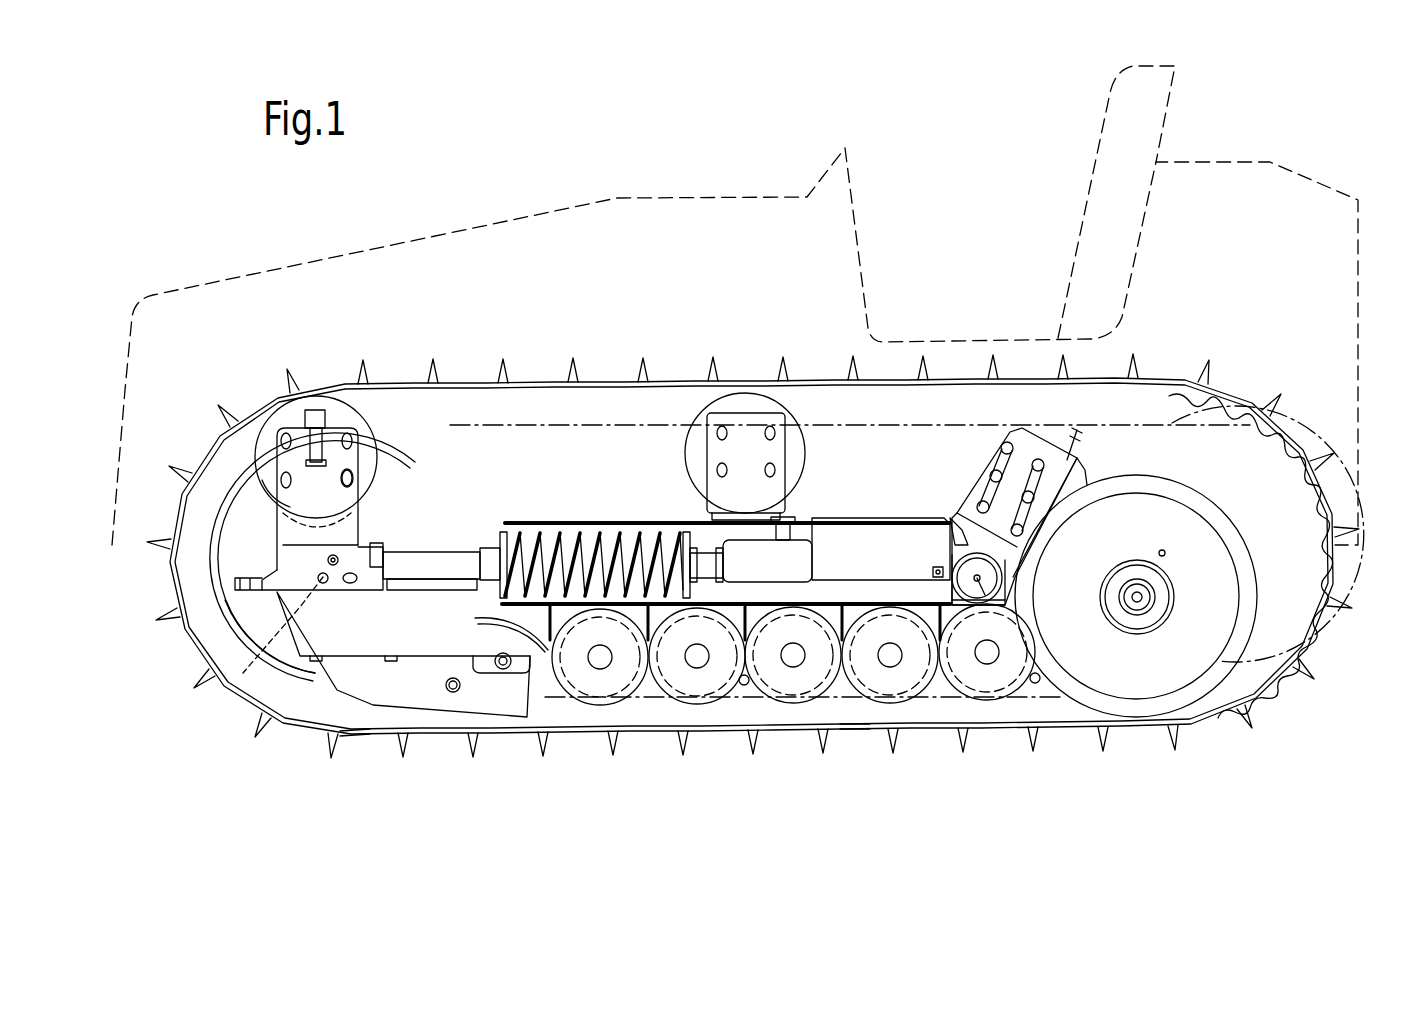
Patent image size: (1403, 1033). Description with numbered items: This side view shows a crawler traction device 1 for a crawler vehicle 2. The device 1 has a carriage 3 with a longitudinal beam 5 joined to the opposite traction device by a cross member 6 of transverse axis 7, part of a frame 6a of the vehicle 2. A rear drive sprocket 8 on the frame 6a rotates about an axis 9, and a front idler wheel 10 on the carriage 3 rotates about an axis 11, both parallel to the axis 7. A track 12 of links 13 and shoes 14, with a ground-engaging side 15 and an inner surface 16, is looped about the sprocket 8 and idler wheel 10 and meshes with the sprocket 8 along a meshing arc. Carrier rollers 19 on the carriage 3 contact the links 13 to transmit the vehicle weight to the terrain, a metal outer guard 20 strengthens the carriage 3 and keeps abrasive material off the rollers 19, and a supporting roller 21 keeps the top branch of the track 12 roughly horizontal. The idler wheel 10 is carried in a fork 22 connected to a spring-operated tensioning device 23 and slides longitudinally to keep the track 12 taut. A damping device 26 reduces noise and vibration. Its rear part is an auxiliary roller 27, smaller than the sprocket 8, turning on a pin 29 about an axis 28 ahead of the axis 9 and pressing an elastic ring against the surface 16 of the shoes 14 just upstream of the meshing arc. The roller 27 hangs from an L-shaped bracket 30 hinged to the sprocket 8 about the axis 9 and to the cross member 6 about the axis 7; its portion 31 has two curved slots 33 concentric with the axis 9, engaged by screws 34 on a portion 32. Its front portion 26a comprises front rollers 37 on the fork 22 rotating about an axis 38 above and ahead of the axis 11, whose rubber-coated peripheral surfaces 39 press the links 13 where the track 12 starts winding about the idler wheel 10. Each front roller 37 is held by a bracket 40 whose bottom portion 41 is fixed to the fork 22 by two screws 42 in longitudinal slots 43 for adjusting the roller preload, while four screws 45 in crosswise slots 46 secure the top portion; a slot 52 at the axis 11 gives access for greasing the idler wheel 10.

The crawler traction device 1 is at (212, 733).
The crawler vehicle 2 is at (589, 187).
The carriage 3 is at (832, 518).
The longitudinal beam 5 is at (848, 583).
The cross member 6 is at (968, 583).
The frame 6a is at (565, 510).
The axis 7 is at (1008, 600).
The rear drive sprocket 8 is at (1215, 460).
The axis 9 is at (1168, 551).
The front idler wheel 10 is at (248, 605).
The axis 11 is at (243, 670).
The track 12 is at (440, 748).
The links 13 is at (512, 749).
The shoes 14 is at (363, 735).
The grouser spike 15 is at (327, 737).
The surface 16 is at (870, 712).
The carrier rollers 19 is at (590, 686).
The metal outer guard 20 is at (402, 690).
The supporting rollers 21 is at (690, 432).
The fork 22 is at (427, 550).
The spring-operated tensioning device 23 is at (693, 548).
The damping device 26 is at (986, 429).
The front portion 26a is at (373, 412).
The auxiliary roller 27 is at (1140, 660).
The axis 28 is at (1206, 690).
The pin 29 is at (1147, 597).
The L-shaped bracket 30 is at (1007, 425).
The portion 31 is at (968, 540).
The portion 32 is at (1083, 485).
The curved slots 33 is at (1030, 480).
The screws 34 is at (995, 478).
The front rollers 37 is at (262, 412).
The axis 38 is at (288, 472).
The rubber-coated peripheral surfaces 39 is at (250, 450).
The bracket 40 is at (355, 492).
The bottom portion 41 is at (292, 560).
The screws 42 is at (326, 580).
The longitudinal slots 43 is at (357, 578).
The screws 45 is at (345, 470).
The slots 46 is at (355, 482).
The slot 52 is at (383, 562).